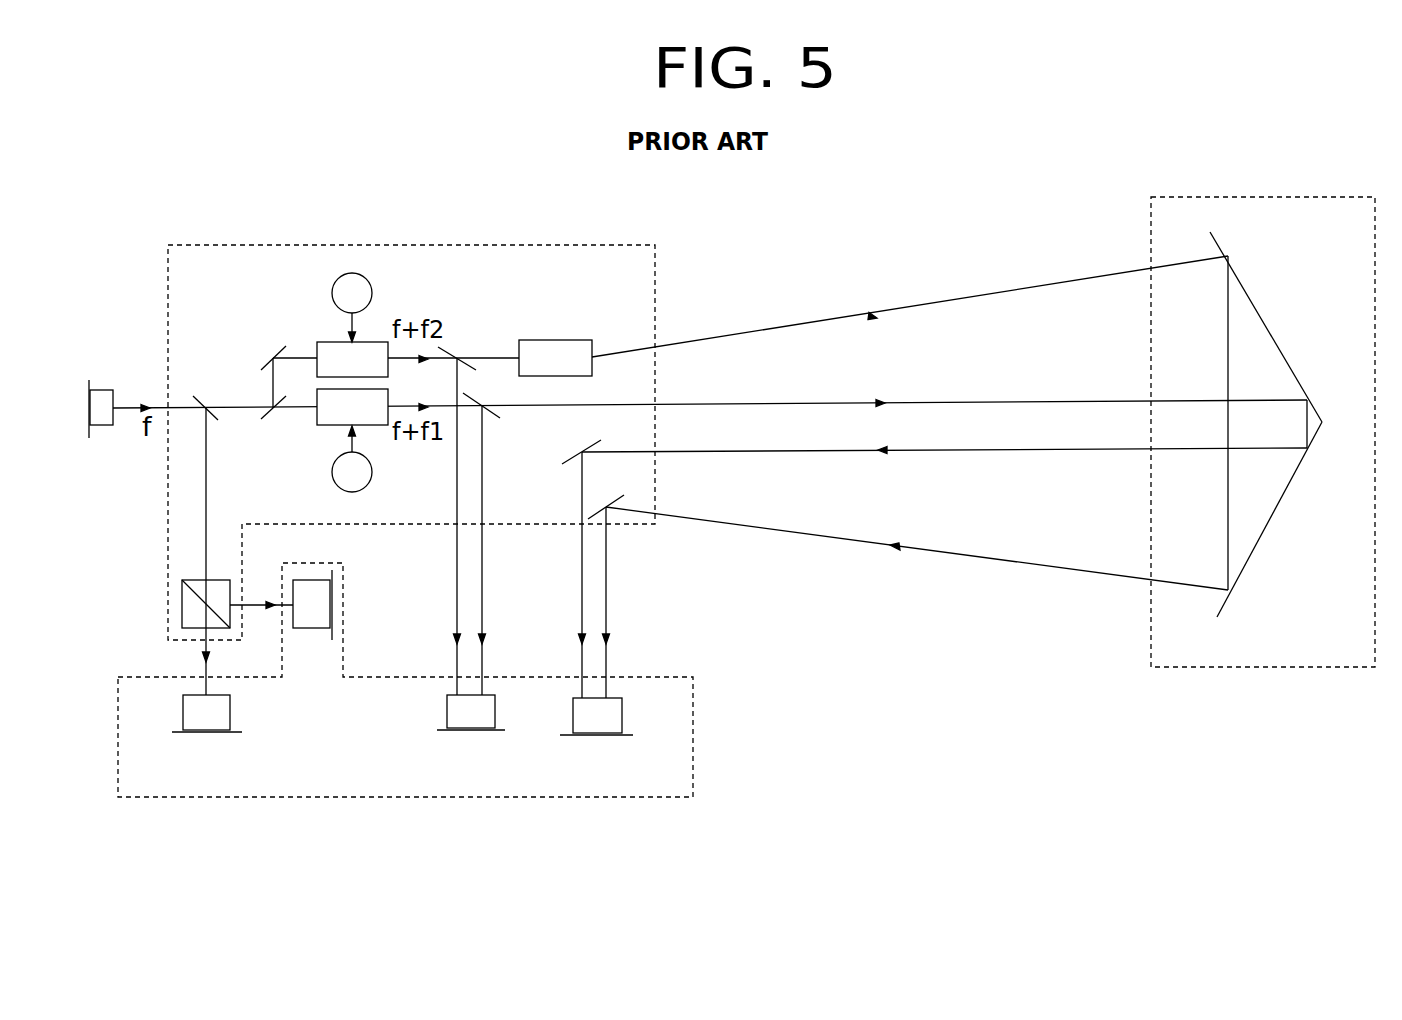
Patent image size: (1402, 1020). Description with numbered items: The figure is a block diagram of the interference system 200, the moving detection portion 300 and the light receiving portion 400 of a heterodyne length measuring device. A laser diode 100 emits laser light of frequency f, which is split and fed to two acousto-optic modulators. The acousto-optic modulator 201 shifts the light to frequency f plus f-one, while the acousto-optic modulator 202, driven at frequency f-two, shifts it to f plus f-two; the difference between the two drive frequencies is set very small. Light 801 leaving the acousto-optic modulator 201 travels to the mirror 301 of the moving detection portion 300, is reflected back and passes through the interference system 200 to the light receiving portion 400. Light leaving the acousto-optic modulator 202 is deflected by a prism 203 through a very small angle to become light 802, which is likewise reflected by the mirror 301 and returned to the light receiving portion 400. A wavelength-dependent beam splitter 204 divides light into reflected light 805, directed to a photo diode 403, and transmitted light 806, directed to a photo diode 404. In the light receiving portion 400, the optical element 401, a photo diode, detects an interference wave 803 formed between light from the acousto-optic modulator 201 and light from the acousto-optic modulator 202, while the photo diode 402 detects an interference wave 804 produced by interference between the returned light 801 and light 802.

The laser diode 100 is at (100, 388).
The interference system 200 is at (418, 243).
The acousto-optic modulator 201 is at (327, 428).
The acousto-optic modulator 202 is at (328, 340).
The prism 203 is at (555, 338).
The beam splitter 204 is at (218, 580).
The moving detection portion 300 is at (1280, 163).
The mirror 301 is at (1255, 547).
The light receiving portion 400 is at (470, 798).
The optical element (photo diode) 401 is at (447, 713).
The optical element (photo diode) 402 is at (622, 712).
The photo diode 403 is at (312, 628).
The photo diode 404 is at (213, 733).
The light 801 is at (978, 400).
The light 802 is at (957, 298).
The interference wave 803 is at (473, 588).
The interference wave 804 is at (598, 588).
The reflected light 805 is at (247, 600).
The transmitted light 806 is at (210, 645).